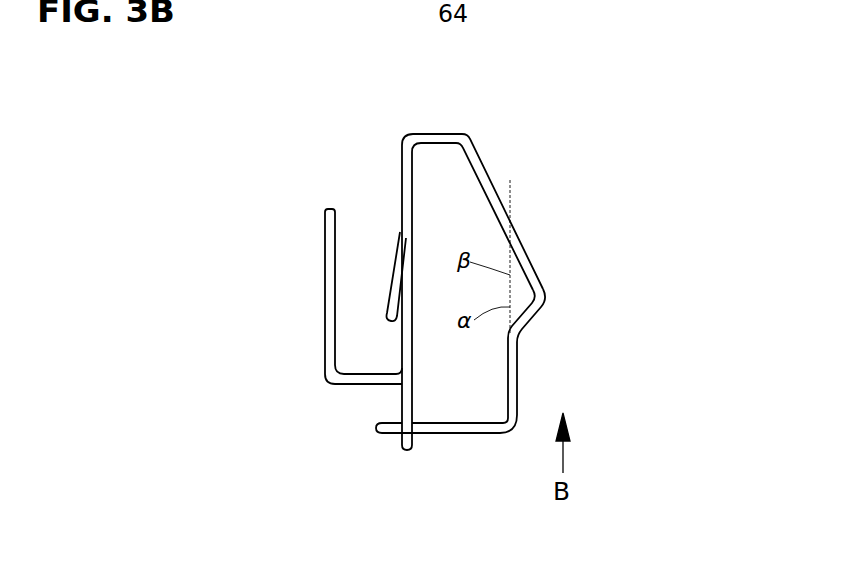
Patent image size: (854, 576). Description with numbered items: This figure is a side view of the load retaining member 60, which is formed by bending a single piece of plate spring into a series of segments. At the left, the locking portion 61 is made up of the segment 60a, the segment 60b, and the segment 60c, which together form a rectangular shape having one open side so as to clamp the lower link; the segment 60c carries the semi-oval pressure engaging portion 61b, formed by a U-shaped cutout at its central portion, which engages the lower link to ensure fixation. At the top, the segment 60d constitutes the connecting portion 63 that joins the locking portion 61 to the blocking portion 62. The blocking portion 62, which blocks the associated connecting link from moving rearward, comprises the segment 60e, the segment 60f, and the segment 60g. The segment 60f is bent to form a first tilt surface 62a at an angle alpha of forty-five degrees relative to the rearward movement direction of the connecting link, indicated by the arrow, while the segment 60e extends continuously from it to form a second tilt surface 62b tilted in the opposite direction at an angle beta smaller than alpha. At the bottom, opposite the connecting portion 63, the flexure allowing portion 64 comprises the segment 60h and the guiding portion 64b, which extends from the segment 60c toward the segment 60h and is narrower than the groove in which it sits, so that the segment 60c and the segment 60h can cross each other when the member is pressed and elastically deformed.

The load retaining member 60 is at (300, 118).
The locking portion 61 is at (213, 150).
The segment 60a is at (327, 271).
The segment 60b is at (370, 381).
The segment 60c is at (402, 150).
The pressure engaging portion 61b is at (392, 296).
The segment 60d is at (544, 133).
The connecting portion 63 is at (440, 136).
The blocking portion 62 is at (705, 237).
The segment 60e is at (576, 212).
The second tilt surface 62b is at (526, 254).
The segment 60f is at (600, 322).
The first tilt surface 62a is at (527, 323).
The segment 60g is at (518, 372).
The flexure allowing portion 64 is at (485, 507).
The guiding portion 64b is at (402, 404).
The segment 60h is at (450, 428).